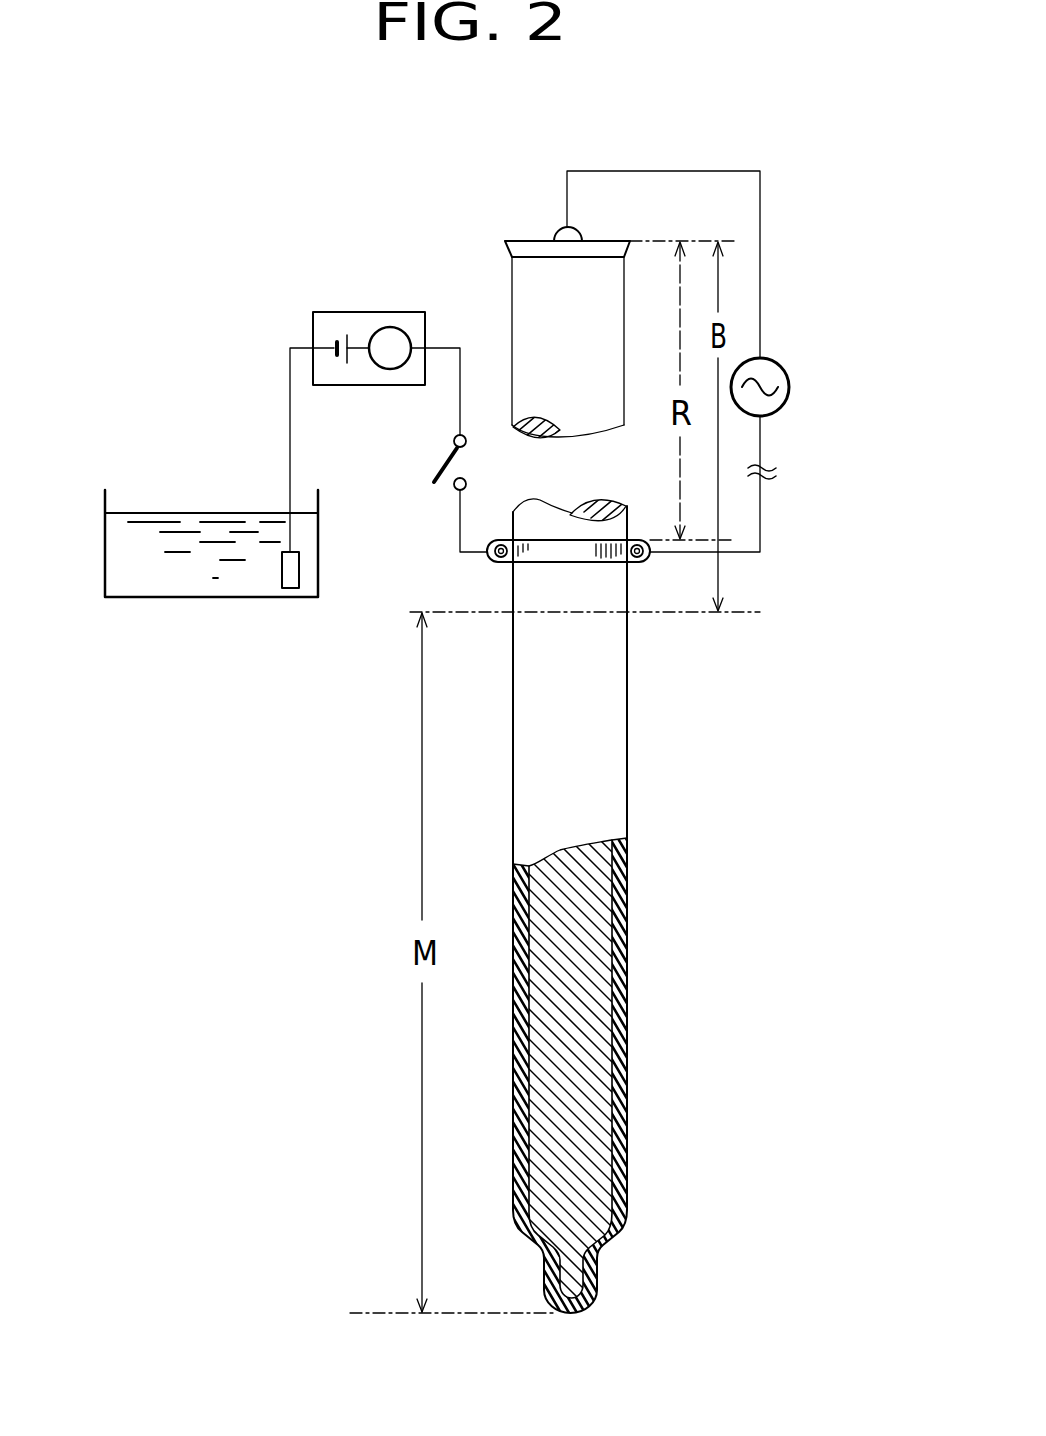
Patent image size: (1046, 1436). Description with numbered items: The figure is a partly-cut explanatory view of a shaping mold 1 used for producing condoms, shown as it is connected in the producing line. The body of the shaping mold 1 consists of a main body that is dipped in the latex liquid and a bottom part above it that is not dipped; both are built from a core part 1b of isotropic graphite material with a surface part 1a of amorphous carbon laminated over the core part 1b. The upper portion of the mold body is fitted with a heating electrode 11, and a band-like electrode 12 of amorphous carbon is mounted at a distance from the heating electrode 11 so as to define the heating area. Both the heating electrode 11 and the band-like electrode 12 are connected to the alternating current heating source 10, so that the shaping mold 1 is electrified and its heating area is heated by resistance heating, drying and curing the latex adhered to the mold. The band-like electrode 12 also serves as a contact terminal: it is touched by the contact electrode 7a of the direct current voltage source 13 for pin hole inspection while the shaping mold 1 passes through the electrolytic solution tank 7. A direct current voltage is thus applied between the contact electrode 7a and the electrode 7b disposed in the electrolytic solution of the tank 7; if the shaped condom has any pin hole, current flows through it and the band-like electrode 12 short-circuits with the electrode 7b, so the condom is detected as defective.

The shaping mold 1 is at (628, 790).
The surface part 1a is at (627, 1037).
The core part 1b is at (591, 946).
The electrolytic solution tank 7 is at (153, 599).
The contact electrode 7a is at (443, 462).
The electrode 7b is at (278, 572).
The alternating current heating source 10 is at (787, 373).
The heating electrode 11 is at (555, 232).
The band-like electrode 12 is at (583, 563).
The direct current voltage source 13 is at (370, 312).